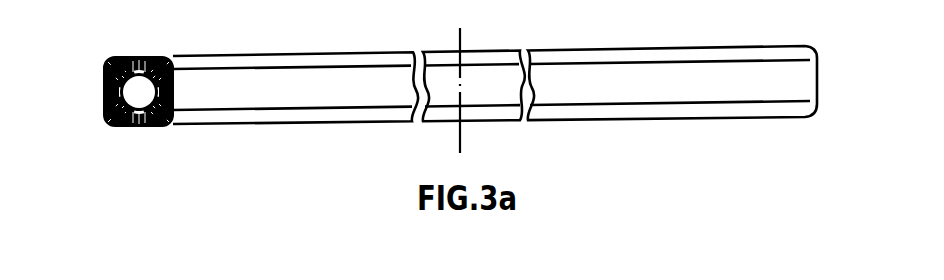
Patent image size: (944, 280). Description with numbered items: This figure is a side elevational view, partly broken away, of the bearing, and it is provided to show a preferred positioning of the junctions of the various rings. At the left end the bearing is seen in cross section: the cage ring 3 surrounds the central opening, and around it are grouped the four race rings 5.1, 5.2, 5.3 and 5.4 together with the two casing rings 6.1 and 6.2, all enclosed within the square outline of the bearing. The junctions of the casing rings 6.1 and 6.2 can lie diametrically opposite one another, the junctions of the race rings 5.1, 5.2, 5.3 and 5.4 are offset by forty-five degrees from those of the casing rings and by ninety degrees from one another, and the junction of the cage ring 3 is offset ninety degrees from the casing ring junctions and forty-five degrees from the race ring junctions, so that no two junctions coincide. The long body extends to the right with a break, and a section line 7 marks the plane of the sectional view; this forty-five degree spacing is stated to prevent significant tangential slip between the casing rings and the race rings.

The cage ring 3 is at (140, 123).
The race ring 5.1 is at (113, 125).
The race ring 5.2 is at (120, 58).
The race ring 5.3 is at (165, 123).
The race ring 5.4 is at (158, 58).
The casing ring 6.1 is at (104, 105).
The casing ring 6.2 is at (173, 99).
The section line 7 is at (461, 35).